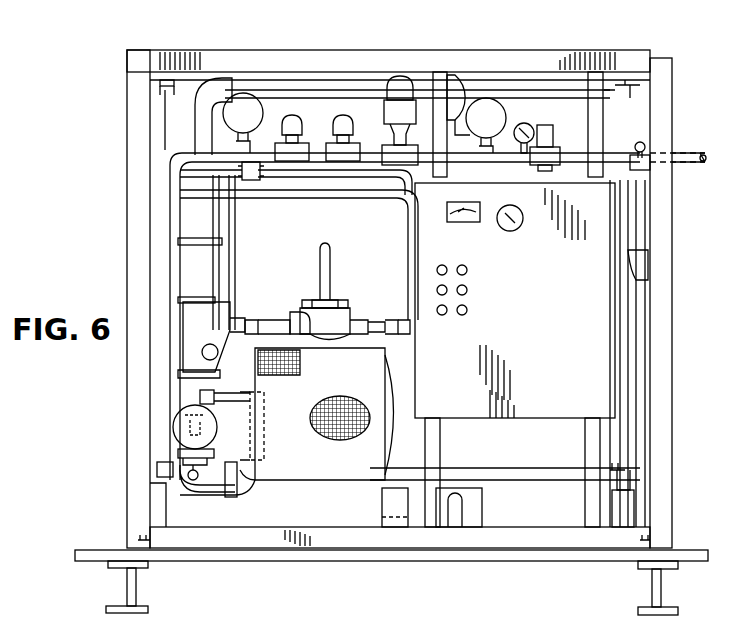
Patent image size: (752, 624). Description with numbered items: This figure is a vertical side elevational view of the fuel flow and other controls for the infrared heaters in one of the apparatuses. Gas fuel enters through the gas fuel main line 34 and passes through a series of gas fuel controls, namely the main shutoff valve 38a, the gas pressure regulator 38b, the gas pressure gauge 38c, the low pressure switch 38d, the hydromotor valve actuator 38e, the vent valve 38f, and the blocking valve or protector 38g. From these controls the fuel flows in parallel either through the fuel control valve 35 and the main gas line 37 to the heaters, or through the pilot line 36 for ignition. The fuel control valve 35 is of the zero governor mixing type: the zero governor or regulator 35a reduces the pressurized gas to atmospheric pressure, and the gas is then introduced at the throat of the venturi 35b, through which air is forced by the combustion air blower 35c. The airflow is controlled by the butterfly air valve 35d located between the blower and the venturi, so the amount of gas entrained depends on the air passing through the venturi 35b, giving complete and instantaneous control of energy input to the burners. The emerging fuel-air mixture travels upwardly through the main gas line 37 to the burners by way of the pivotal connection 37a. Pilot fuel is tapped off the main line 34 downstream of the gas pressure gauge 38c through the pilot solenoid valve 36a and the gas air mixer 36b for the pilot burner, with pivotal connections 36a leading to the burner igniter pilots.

The gas fuel main line 34 is at (700, 158).
The fuel control valve 35 is at (193, 348).
The zero governor 35a is at (345, 303).
The venturi 35b is at (215, 318).
The combustion air blower 35c is at (397, 400).
The butterfly air valve 35d is at (190, 428).
The pilot line 36 is at (237, 262).
The pilot solenoid valve 36a is at (258, 180).
The gas air mixer 36b is at (200, 398).
The main gas line 37 is at (285, 92).
The pivotal connection 37a is at (463, 90).
The main shutoff valve 38a is at (645, 145).
The gas pressure regulator 38b is at (243, 108).
The gas pressure gauge 38c is at (530, 123).
The low pressure switch 38d is at (492, 110).
The hydromotor valve actuator 38e is at (400, 88).
The vent valve 38f is at (343, 122).
The blocking valve 38g is at (293, 130).